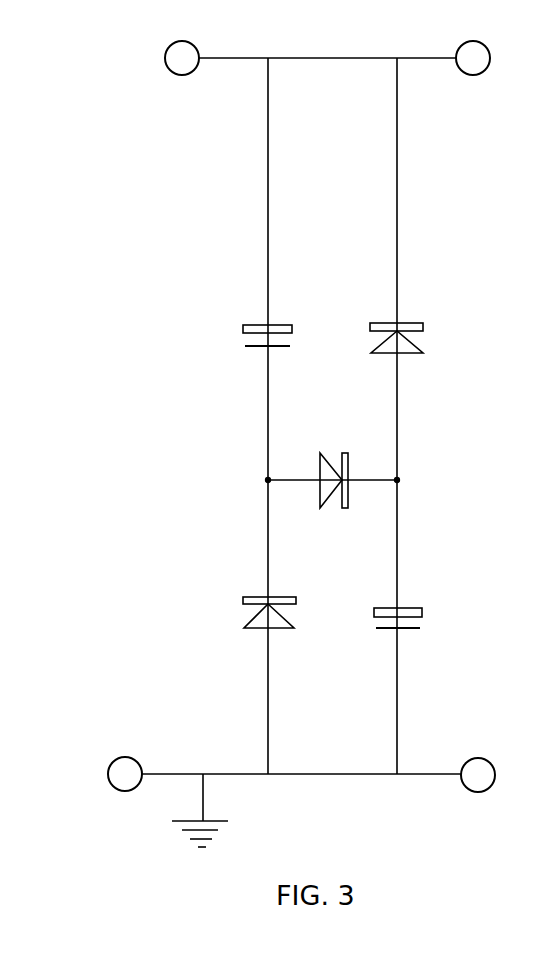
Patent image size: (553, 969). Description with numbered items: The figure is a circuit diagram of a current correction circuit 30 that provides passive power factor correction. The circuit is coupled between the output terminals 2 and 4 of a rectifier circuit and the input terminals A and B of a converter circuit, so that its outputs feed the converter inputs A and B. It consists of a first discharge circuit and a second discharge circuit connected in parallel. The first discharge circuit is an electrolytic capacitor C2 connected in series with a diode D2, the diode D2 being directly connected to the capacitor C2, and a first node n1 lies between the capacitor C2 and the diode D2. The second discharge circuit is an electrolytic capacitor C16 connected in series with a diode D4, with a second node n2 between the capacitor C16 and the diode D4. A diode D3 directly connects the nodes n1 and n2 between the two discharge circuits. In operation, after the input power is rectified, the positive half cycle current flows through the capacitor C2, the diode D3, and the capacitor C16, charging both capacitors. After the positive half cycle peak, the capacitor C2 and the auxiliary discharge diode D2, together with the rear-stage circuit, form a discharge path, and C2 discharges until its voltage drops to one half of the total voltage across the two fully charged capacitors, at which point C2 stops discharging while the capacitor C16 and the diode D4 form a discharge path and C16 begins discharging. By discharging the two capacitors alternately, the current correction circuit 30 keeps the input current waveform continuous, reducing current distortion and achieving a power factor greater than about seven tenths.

The current correction circuit 30 is at (102, 102).
The output terminal of the rectifier circuit 2 is at (182, 58).
The input terminal of the converter circuit A is at (473, 58).
The output terminal of the rectifier circuit 4 is at (125, 774).
The input terminal of the converter circuit B is at (478, 775).
The electrolytic capacitor C2 is at (281, 311).
The diode D4 is at (373, 349).
The diode D3 is at (332, 459).
The first node n1 is at (248, 481).
The second node n2 is at (417, 481).
The diode D2 is at (242, 621).
The electrolytic capacitor C16 is at (378, 597).